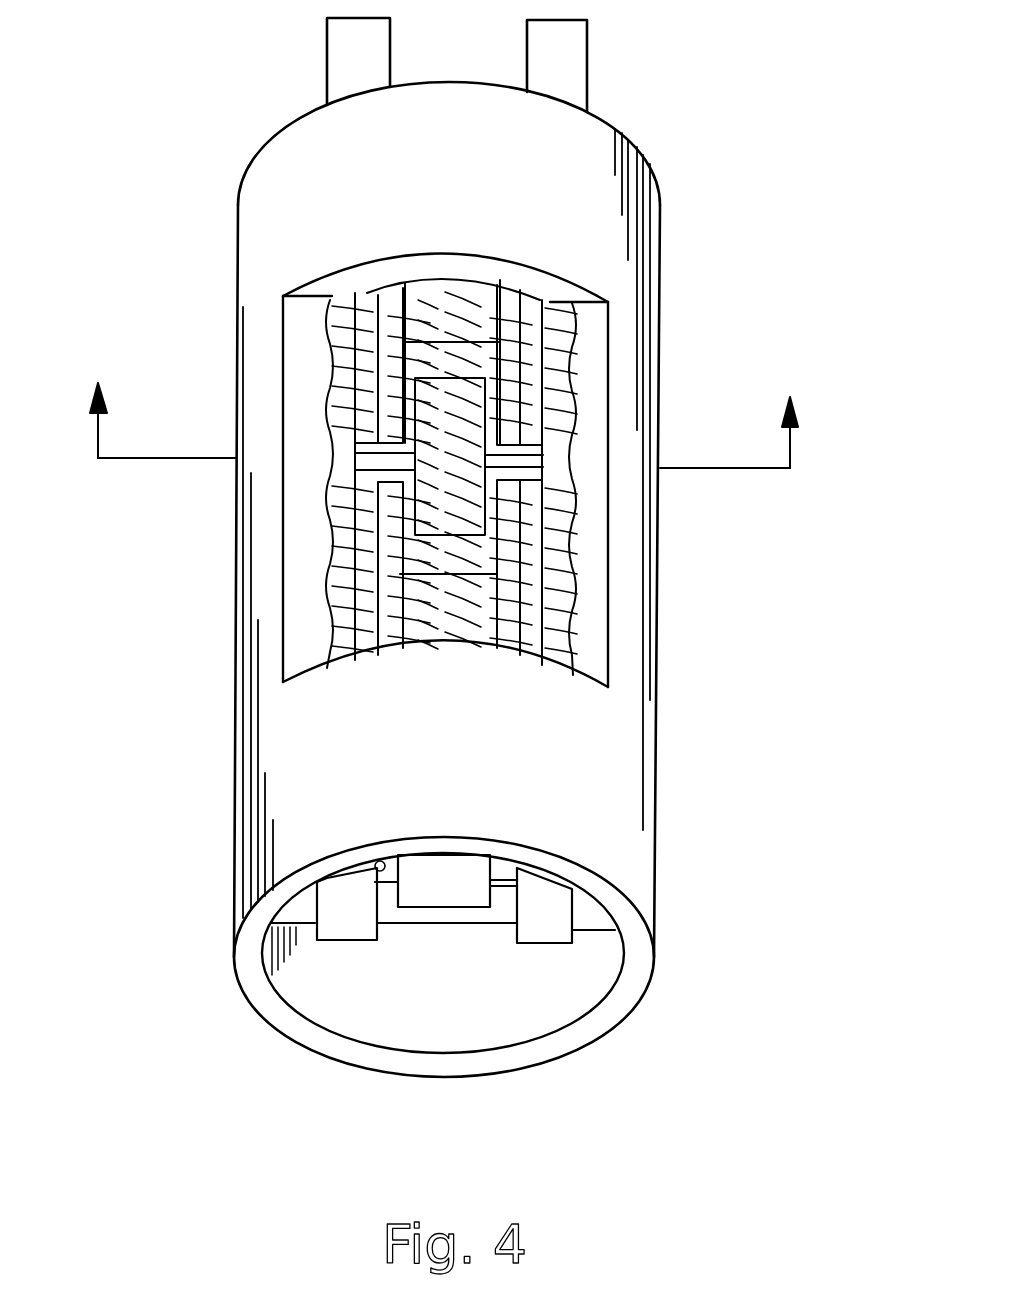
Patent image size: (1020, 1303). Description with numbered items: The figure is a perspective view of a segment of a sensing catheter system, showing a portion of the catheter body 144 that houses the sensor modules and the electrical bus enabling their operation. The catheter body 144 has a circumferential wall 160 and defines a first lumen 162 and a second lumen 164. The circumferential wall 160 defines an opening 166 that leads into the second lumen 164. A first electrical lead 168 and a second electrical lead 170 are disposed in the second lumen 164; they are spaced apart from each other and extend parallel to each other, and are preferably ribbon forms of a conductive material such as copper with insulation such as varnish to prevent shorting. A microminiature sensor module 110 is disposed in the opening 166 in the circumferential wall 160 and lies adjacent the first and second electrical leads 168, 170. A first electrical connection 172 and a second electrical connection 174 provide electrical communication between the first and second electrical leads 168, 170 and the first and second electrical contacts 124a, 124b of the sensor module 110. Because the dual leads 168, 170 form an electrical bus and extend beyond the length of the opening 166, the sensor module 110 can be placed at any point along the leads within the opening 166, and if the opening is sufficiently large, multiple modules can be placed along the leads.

The circumferential wall 160 is at (466, 745).
The catheter body 144 is at (603, 230).
The opening 166 is at (290, 652).
The first electrical connection 172 is at (330, 413).
The second electrical connection 174 is at (520, 417).
The first electrical contact 124a is at (355, 495).
The second electrical contact 124b is at (523, 483).
The sensor module 110 is at (443, 535).
The first lumen 162 is at (407, 1023).
The second lumen 164 is at (411, 972).
The first electrical lead 168 is at (347, 942).
The second electrical lead 170 is at (540, 943).